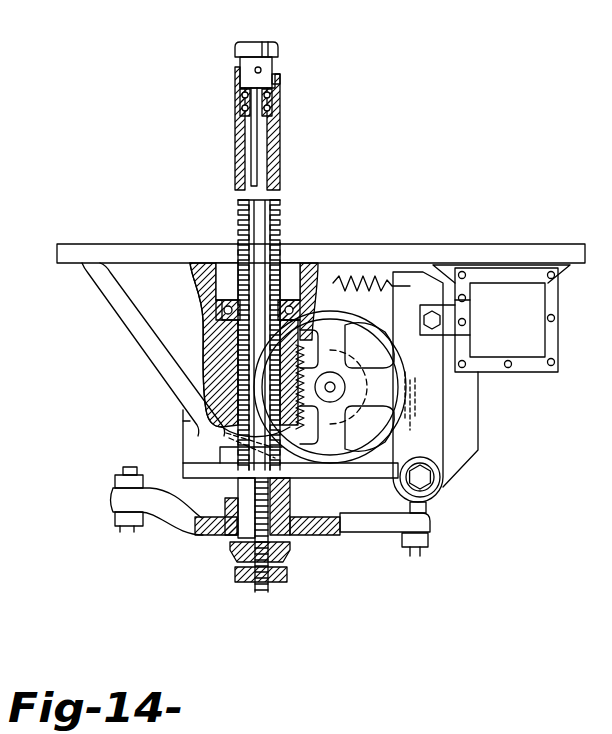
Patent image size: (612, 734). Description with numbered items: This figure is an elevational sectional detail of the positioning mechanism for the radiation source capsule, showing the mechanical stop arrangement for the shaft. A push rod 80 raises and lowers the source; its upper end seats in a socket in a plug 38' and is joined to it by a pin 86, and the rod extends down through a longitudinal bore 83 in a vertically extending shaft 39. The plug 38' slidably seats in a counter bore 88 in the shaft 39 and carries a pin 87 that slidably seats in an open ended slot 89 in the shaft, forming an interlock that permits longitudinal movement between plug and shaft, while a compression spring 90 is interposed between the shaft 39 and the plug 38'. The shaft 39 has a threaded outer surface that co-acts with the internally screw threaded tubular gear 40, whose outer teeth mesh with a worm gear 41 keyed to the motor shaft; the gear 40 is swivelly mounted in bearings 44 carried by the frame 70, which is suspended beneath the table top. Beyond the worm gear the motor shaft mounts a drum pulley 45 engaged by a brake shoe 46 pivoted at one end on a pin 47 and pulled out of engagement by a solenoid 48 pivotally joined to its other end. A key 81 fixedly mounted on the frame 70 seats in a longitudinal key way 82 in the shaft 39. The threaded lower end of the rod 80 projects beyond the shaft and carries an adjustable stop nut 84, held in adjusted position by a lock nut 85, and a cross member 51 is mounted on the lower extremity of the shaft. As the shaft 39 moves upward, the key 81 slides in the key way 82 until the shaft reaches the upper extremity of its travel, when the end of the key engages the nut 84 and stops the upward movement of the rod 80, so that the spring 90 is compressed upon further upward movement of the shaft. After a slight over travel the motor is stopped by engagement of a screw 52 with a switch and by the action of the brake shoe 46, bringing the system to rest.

The plug 38' is at (258, 33).
The pin 86 is at (255, 70).
The pin 87 is at (278, 72).
The open ended slot 89 is at (281, 80).
The compression spring 90 is at (239, 100).
The counter bore 88 is at (270, 105).
The shaft 39 is at (282, 142).
The longitudinal bore 83 is at (268, 160).
The push rod 80 is at (254, 145).
The key way 82 is at (238, 208).
The bearings 44 is at (288, 300).
The tubular gear 40 is at (222, 336).
The worm gear 41 is at (330, 387).
The drum pulley 45 is at (398, 366).
The brake shoe 46 is at (432, 451).
The pin 47 is at (434, 483).
The solenoid 48 is at (520, 330).
The frame 70 is at (186, 421).
The key 81 is at (243, 486).
The cross member 51 is at (183, 530).
The screw 52 is at (425, 505).
The adjustable stop nut 84 is at (290, 548).
The lock nut 85 is at (278, 580).